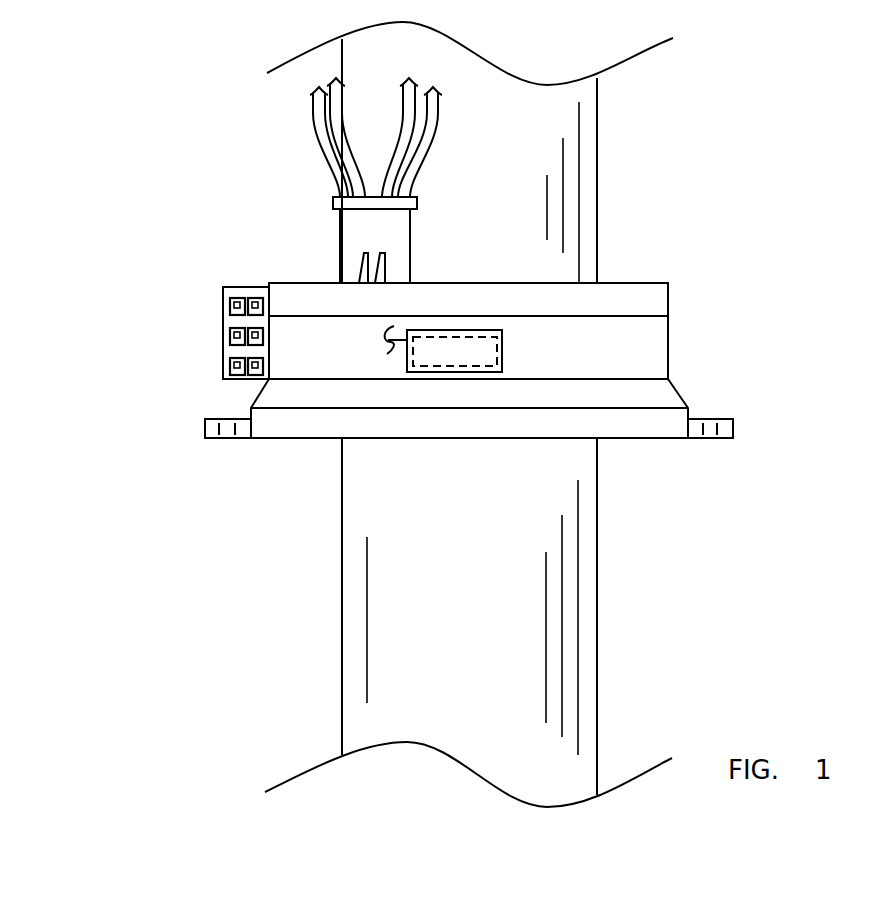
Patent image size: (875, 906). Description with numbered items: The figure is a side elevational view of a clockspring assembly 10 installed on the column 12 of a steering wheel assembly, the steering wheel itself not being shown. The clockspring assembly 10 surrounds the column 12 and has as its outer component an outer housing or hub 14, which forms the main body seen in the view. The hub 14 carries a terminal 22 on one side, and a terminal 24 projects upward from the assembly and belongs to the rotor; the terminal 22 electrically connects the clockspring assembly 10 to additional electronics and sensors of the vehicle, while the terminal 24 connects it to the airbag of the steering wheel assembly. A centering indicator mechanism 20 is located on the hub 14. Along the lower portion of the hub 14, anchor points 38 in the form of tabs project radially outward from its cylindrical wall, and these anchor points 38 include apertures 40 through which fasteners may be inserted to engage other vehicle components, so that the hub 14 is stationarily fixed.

The clockspring assembly 10 is at (753, 182).
The column 12 is at (525, 647).
The outer housing or hub 14 is at (643, 347).
The centering indicator mechanism 20 is at (483, 353).
The terminal 22 is at (223, 327).
The terminal 24 is at (357, 235).
The anchor points 38 is at (205, 427).
The apertures 40 is at (230, 438).